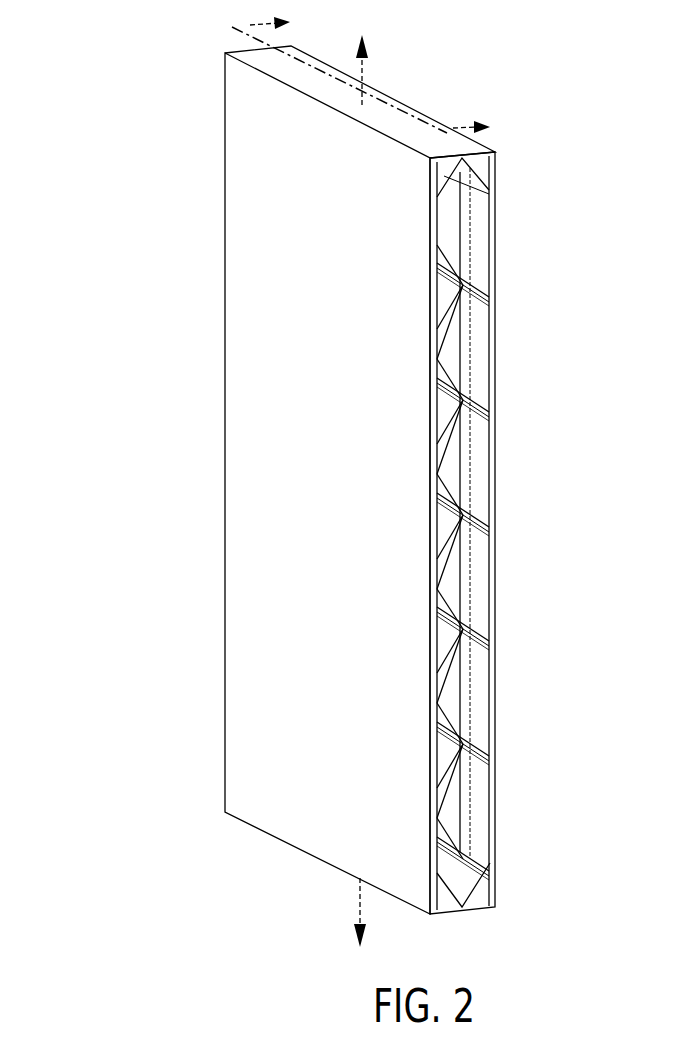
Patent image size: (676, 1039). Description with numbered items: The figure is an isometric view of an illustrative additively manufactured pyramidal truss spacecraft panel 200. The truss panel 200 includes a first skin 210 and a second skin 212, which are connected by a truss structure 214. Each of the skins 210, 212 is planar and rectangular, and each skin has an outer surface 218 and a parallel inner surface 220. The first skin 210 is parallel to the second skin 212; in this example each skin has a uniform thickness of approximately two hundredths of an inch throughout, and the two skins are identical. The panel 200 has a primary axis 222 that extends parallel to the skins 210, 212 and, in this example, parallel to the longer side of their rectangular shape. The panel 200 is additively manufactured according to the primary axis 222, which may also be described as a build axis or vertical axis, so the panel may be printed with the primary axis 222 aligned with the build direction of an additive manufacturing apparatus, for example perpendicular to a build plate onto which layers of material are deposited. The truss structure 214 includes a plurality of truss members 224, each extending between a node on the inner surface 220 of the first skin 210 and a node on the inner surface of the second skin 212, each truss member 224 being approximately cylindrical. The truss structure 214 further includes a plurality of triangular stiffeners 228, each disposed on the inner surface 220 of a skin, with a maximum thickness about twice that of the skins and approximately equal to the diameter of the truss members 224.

The pyramidal truss spacecraft panel 200 is at (105, 86).
The first skin 210 is at (488, 375).
The second skin 212 is at (240, 527).
The truss structure 214 is at (450, 210).
The outer surface 218 is at (333, 268).
The inner surface 220 is at (452, 316).
The primary axis 222 is at (366, 68).
The truss members 224 is at (450, 503).
The triangular stiffeners 228 is at (463, 605).